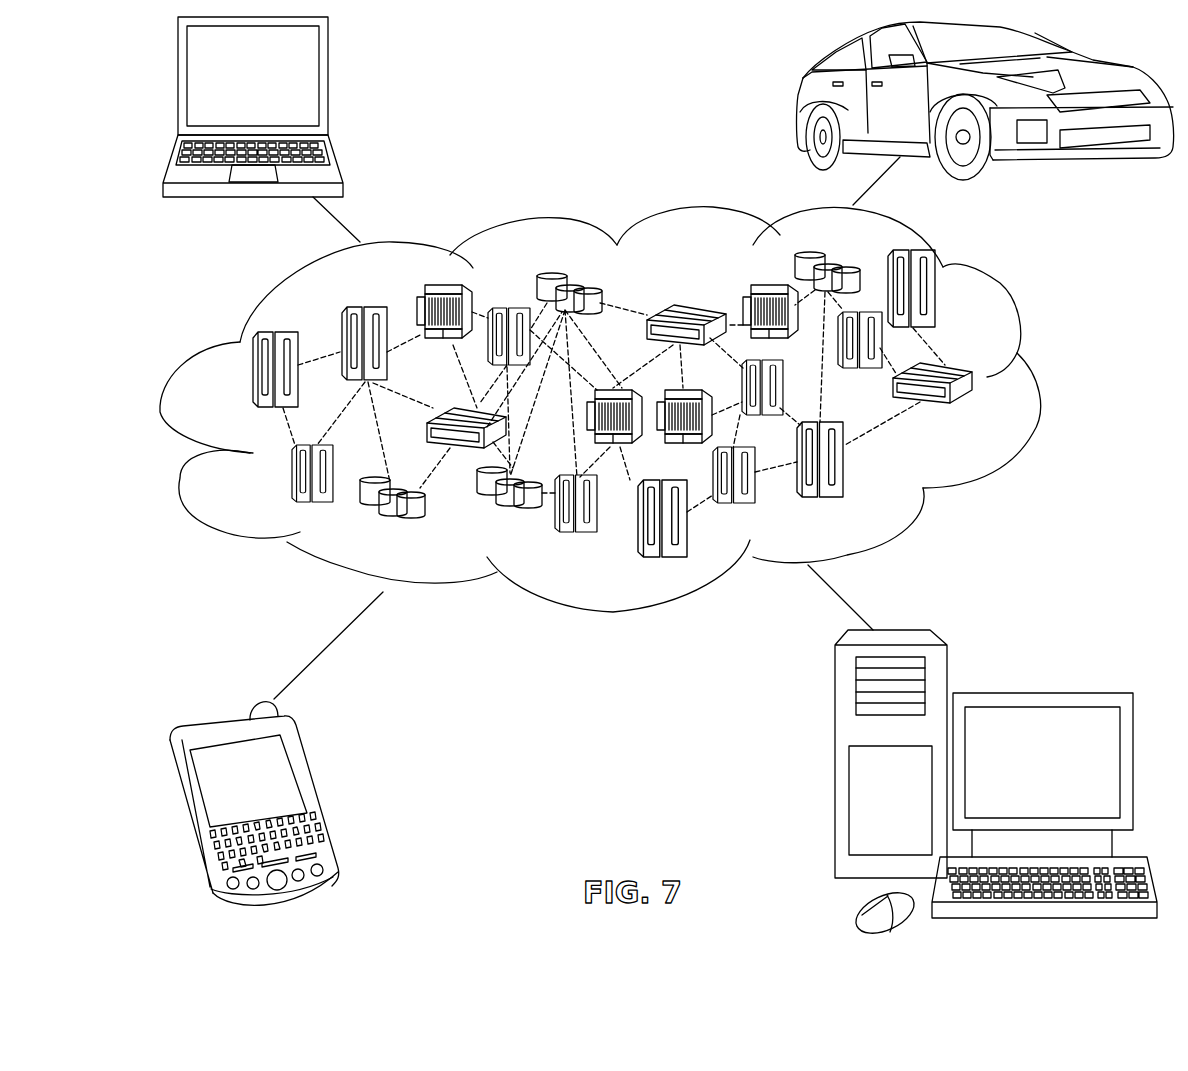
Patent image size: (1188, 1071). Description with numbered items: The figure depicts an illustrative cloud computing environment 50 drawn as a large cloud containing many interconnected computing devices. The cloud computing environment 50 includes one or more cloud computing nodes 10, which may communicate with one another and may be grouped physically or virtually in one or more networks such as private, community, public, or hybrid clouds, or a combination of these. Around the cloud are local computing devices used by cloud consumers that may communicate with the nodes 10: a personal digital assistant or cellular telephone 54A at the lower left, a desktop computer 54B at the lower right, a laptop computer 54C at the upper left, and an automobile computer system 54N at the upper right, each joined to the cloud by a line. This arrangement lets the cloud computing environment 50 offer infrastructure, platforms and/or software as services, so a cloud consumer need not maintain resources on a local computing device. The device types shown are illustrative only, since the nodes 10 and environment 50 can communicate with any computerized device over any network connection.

The cloud computing node 10 is at (977, 413).
The cloud computing environment 50 is at (637, 409).
The personal digital assistant (PDA) or cellular telephone 54A is at (317, 793).
The desktop computer 54B is at (1038, 693).
The laptop computer 54C is at (328, 85).
The automobile computer system 54N is at (800, 100).